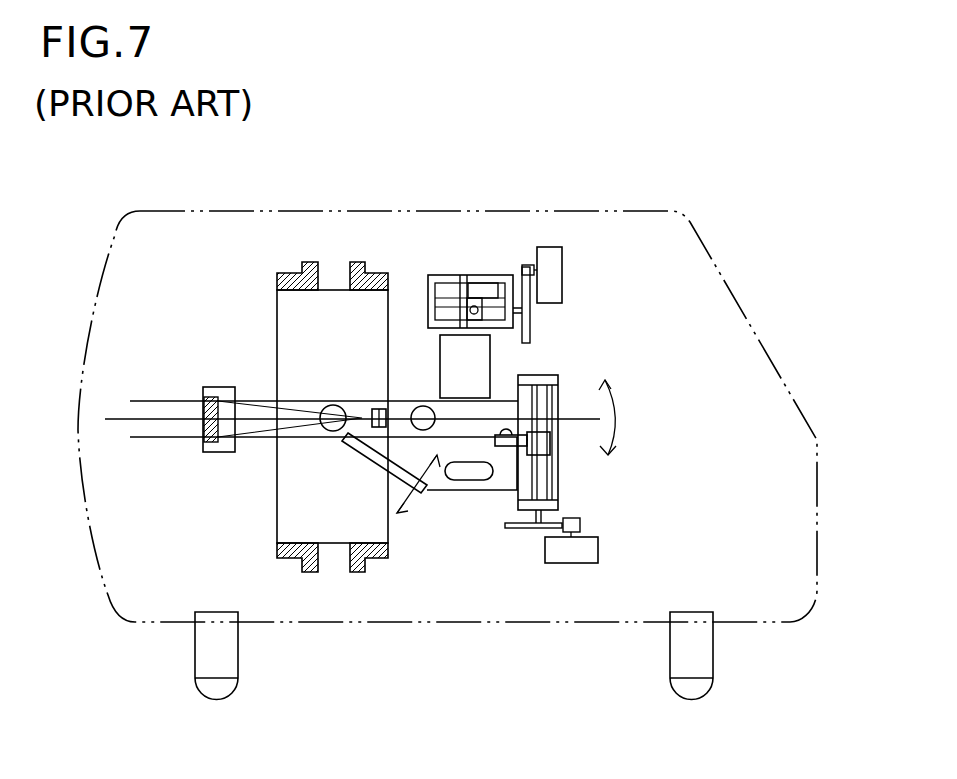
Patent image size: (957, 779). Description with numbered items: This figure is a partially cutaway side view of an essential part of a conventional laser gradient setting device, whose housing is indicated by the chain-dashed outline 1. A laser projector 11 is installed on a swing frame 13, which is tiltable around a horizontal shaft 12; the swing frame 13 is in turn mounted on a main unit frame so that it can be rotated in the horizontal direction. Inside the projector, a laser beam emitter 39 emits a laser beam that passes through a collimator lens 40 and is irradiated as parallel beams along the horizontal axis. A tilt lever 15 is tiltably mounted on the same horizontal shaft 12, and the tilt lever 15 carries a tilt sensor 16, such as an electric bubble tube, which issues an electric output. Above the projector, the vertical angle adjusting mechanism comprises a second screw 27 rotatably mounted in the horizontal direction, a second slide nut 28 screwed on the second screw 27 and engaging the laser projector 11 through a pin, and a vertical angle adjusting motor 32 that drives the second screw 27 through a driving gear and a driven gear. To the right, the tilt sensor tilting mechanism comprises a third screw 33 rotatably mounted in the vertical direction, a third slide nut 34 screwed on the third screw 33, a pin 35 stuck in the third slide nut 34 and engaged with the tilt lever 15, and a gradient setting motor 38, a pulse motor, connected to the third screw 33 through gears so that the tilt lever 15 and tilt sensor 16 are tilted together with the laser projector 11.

The housing 1 is at (762, 345).
The laser projector 11 is at (262, 398).
The horizontal shaft 12 is at (333, 431).
The swing frame 13 is at (275, 323).
The tilt lever 15 is at (376, 468).
The tilt sensor 16 is at (443, 495).
The second screw 27 is at (493, 280).
The second slide nut 28 is at (478, 288).
The vertical angle adjusting motor 32 is at (553, 272).
The third screw 33 is at (560, 398).
The third slide nut 34 is at (540, 445).
The pin 35 is at (480, 484).
The gradient setting motor 38 is at (572, 548).
The laser beam emitter 39 is at (382, 408).
The collimator lens 40 is at (202, 434).